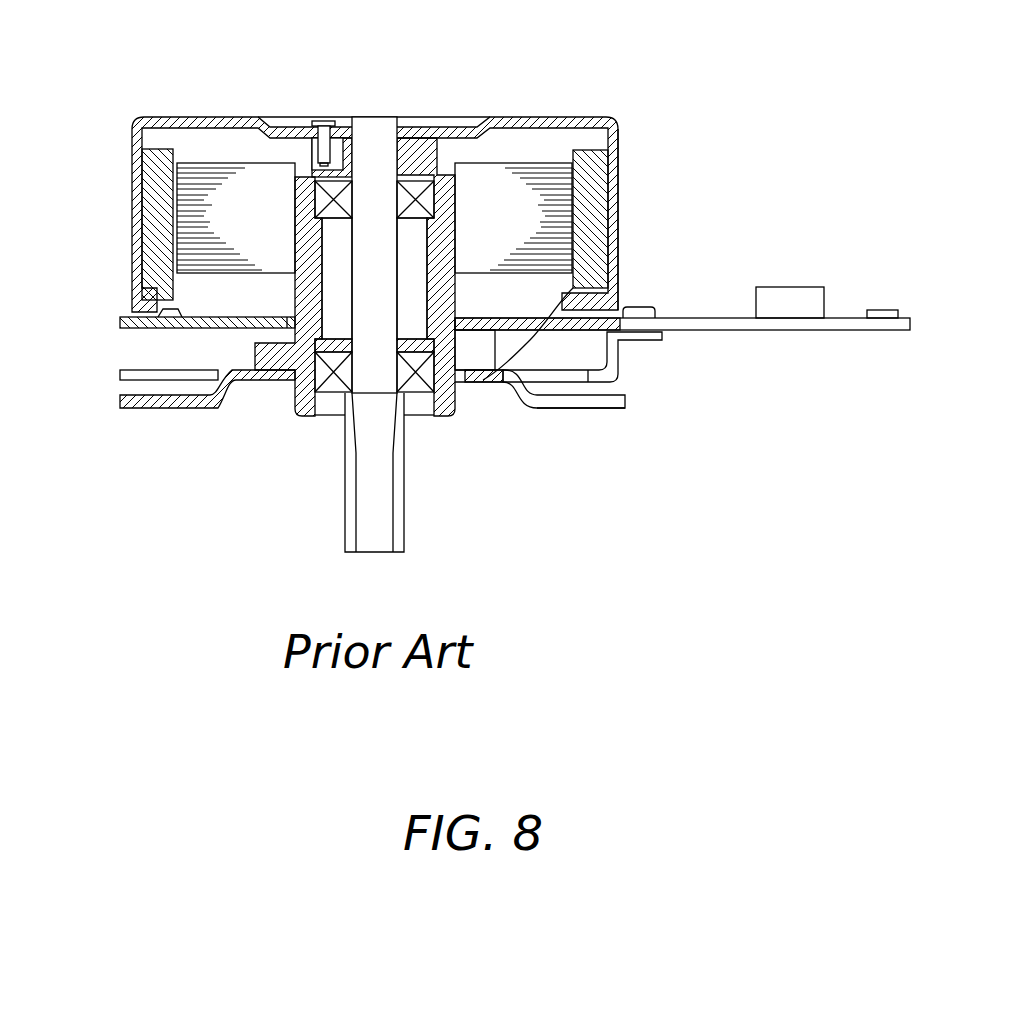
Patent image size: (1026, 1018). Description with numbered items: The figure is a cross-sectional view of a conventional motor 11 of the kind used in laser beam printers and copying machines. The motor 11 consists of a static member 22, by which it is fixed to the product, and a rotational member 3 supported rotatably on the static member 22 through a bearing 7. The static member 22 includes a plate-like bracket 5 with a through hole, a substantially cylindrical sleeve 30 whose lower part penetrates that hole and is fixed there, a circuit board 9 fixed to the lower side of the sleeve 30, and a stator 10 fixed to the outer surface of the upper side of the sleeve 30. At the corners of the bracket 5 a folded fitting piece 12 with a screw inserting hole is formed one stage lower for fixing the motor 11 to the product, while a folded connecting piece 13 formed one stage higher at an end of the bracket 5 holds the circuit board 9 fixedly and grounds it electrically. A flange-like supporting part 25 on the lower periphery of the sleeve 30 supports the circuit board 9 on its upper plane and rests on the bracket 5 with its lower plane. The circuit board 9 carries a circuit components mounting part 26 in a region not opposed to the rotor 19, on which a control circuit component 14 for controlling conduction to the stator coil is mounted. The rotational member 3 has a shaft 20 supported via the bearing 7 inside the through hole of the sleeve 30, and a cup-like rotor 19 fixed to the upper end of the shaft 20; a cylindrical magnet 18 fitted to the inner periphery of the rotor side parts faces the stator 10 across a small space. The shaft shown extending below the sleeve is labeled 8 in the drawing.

The rotational member 3 is at (115, 137).
The motor 11 is at (137, 102).
The rotor 19 is at (618, 182).
The magnet 18 is at (150, 222).
The stator 10 is at (525, 163).
The static member 22 is at (165, 522).
The sleeve 30 is at (302, 257).
The shaft 20 is at (370, 135).
The shaft 8 is at (403, 493).
The bearing 7 is at (413, 192).
The fitting piece 12 is at (158, 402).
The bracket 5 is at (603, 408).
The supporting part 25 is at (483, 357).
The connecting piece 13 is at (643, 333).
The circuit board 9 is at (685, 318).
The control circuit component 14 is at (840, 243).
The circuit components mounting part 26 is at (850, 330).